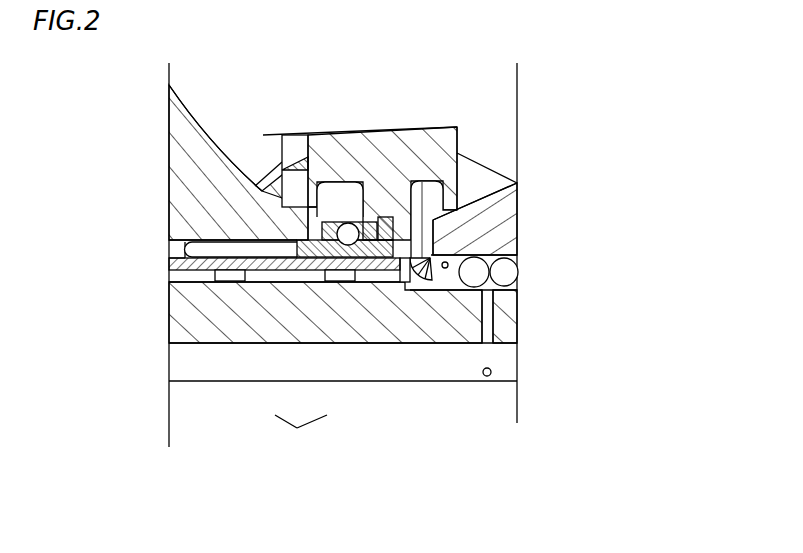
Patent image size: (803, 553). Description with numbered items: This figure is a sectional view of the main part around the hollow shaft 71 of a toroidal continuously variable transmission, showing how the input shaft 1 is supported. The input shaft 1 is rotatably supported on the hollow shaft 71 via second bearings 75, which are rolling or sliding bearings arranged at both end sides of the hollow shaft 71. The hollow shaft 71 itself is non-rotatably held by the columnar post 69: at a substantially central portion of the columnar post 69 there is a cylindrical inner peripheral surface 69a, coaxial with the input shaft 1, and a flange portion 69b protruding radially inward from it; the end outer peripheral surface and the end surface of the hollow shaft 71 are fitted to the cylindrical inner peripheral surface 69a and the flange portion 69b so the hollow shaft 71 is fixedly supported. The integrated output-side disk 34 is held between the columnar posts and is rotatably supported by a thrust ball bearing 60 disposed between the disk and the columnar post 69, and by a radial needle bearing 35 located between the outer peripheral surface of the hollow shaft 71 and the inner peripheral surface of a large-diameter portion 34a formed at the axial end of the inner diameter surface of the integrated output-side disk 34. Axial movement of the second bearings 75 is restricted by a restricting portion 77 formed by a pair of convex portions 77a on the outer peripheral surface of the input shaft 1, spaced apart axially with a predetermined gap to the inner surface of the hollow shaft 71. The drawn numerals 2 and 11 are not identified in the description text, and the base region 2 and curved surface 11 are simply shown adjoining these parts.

The input shaft 1 is at (210, 320).
The rotating body 2 is at (478, 220).
The curved surface 11 is at (263, 176).
The integrated output-side disk 34 is at (190, 158).
The large-diameter portion 34a is at (182, 238).
The radial needle bearing 35 is at (265, 247).
The thrust ball bearing 60 is at (400, 166).
The columnar post 69 is at (345, 155).
The cylindrical inner peripheral surface 69a is at (407, 282).
The flange portion 69b is at (458, 273).
The hollow shaft 71 is at (180, 283).
The second bearing 75 is at (322, 212).
The restricting portion 77 is at (301, 433).
The convex portion 77a is at (238, 277).